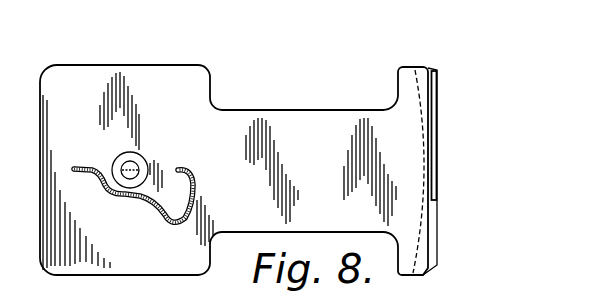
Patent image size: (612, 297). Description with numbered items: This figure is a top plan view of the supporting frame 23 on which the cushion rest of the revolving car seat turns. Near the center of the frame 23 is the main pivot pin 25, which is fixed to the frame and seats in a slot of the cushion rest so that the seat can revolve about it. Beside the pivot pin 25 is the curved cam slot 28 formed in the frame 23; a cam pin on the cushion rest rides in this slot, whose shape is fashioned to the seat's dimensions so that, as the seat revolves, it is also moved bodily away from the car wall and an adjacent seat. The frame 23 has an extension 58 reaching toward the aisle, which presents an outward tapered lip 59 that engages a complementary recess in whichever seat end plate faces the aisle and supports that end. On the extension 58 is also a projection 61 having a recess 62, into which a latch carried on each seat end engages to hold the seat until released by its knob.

The frame 23 is at (167, 80).
The main pivot pin 25 is at (131, 169).
The cam slot 28 is at (203, 187).
The extension 58 is at (329, 122).
The outward tapered lip 59 is at (439, 162).
The projection 61 is at (439, 148).
The recess 62 is at (431, 170).